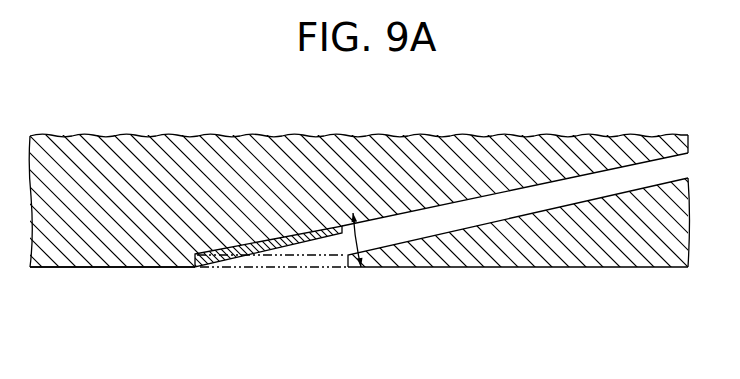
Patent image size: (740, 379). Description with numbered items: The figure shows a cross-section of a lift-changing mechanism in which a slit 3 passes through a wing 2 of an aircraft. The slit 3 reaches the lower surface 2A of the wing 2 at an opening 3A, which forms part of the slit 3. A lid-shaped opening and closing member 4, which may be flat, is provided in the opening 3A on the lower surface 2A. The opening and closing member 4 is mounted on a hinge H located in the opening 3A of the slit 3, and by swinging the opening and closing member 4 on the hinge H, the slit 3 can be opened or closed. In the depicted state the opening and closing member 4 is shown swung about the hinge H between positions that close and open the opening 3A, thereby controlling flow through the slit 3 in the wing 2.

The wing 2 is at (135, 139).
The lower surface 2A is at (102, 268).
The slit 3 is at (525, 205).
The opening 3A is at (304, 274).
The opening and closing member 4 is at (261, 251).
The hinge H is at (193, 275).